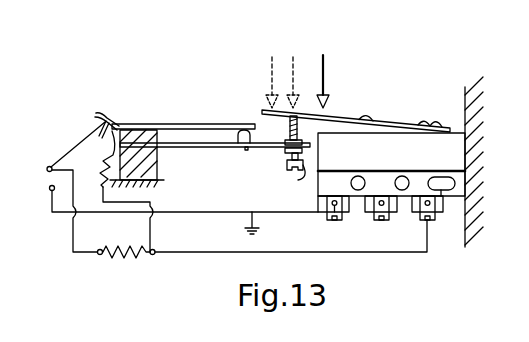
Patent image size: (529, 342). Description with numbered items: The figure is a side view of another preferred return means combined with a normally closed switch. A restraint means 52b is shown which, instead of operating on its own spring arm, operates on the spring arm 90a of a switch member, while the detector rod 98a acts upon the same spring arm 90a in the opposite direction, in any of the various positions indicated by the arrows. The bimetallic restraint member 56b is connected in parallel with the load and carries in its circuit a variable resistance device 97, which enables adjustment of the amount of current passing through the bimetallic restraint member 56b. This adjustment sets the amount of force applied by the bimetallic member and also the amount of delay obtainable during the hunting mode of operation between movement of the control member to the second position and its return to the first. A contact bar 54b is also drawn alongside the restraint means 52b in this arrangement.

The variable resistance device 97 is at (97, 152).
The contact bar 54b is at (185, 143).
The bimetallic restraint member 56b is at (256, 118).
The restraint means 52b is at (307, 168).
The spring arm 90a is at (340, 120).
The detector rod 98a is at (326, 80).